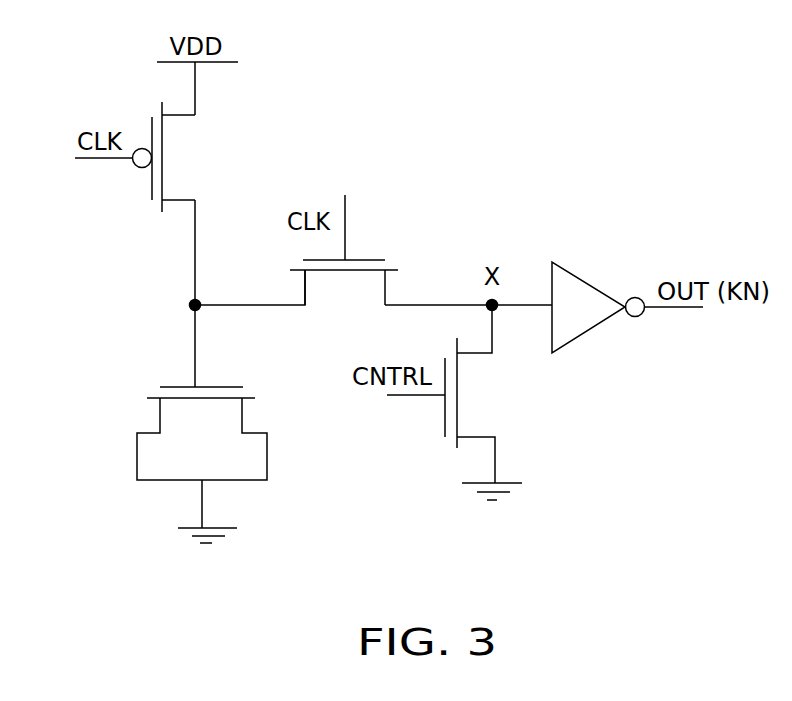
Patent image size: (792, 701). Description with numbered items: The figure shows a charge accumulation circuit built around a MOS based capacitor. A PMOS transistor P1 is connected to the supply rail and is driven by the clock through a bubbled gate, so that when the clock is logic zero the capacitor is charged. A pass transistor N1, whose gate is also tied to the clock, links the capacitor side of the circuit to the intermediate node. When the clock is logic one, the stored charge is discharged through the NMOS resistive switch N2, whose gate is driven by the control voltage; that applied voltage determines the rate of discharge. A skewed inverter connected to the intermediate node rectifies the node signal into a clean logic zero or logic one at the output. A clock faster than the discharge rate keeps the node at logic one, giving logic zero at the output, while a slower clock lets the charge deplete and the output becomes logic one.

The PMOS transistor P1 is at (150, 157).
The NMOS pass transistor N1 is at (391, 260).
The NMOS resistive switch N2 is at (457, 402).